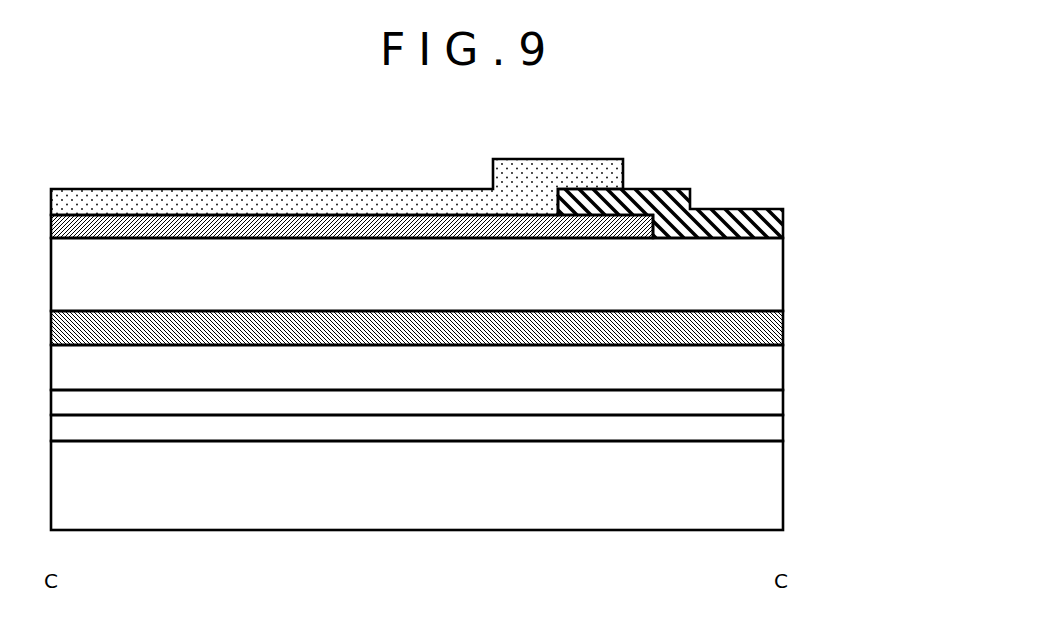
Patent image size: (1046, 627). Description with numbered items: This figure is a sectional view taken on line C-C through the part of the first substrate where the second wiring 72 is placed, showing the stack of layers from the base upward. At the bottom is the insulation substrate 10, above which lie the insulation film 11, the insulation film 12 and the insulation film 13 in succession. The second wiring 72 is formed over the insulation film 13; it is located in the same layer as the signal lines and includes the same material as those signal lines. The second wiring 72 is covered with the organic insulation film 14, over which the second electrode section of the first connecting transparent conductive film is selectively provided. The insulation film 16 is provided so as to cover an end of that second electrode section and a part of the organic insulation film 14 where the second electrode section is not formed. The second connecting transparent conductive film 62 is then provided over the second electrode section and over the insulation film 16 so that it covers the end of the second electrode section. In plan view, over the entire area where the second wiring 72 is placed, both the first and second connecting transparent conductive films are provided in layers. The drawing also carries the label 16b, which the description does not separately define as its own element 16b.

The second connecting transparent conductive film 62 is at (212, 193).
The insulation film 16 is at (783, 222).
The electrode lower layer 16b is at (301, 222).
The organic insulation film 14 is at (783, 275).
The second wiring 72 is at (783, 328).
The insulation film 13 is at (783, 362).
The insulation film 12 is at (783, 402).
The insulation film 11 is at (783, 428).
The insulation substrate 10 is at (783, 485).